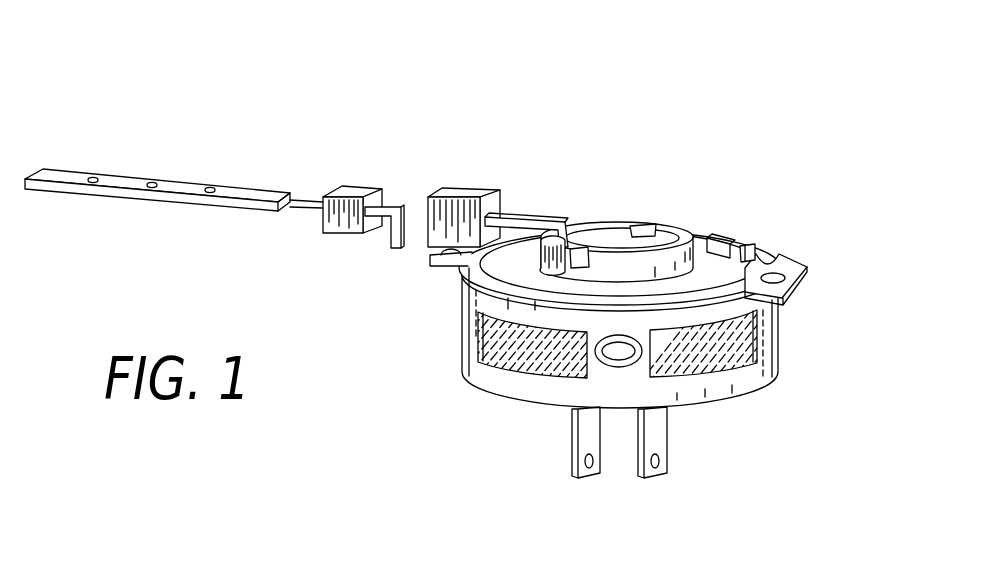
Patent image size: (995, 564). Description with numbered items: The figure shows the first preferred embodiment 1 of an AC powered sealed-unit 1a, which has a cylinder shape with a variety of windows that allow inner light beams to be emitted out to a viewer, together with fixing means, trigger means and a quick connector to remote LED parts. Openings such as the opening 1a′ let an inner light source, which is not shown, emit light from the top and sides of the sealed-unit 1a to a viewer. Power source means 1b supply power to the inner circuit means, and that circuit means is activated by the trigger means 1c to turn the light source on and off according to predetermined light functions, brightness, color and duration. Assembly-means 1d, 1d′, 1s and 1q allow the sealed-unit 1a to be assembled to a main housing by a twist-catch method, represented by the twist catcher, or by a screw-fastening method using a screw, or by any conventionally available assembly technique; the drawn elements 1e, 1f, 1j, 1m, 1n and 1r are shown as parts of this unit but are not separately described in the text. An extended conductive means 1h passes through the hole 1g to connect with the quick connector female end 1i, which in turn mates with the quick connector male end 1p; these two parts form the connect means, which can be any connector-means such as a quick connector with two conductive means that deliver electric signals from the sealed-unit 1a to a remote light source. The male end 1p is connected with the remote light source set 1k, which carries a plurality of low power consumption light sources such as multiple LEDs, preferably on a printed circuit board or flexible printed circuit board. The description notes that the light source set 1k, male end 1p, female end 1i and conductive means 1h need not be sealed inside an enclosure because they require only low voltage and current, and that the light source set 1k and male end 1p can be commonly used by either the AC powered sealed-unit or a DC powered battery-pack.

The first preferred embodiment 1 is at (832, 57).
The AC powered sealed-unit 1a is at (468, 338).
The opening 1a′ is at (510, 360).
The power source means 1b is at (568, 468).
The trigger means 1c is at (633, 367).
The assembly-means 1d is at (653, 230).
The assembly-means 1d′ is at (566, 268).
The tab 1e is at (722, 242).
The block 1f is at (747, 253).
The hole 1g is at (567, 228).
The extended conductive means 1h is at (517, 217).
The quick connector female end 1i is at (470, 193).
The connecting rod 1j is at (392, 238).
The remote light source set 1k is at (50, 173).
The holes 1m is at (207, 188).
The rod 1n is at (312, 200).
The quick connector male end 1p is at (353, 188).
The assembly-means 1q is at (796, 293).
The screw hole 1r is at (783, 273).
The assembly-means 1s is at (441, 253).
The element screw is at (792, 286).
The element twist catcher is at (640, 230).
The connector-means connect means is at (474, 118).